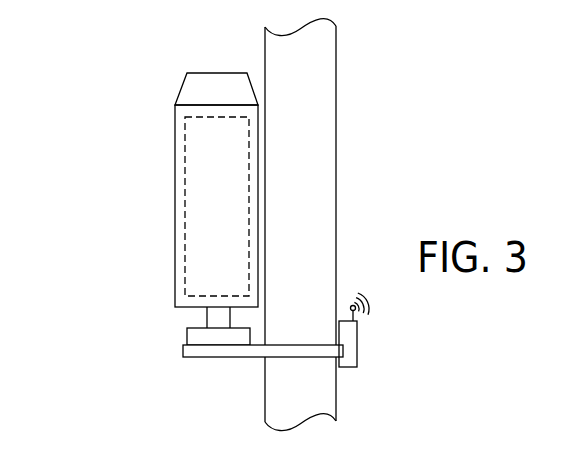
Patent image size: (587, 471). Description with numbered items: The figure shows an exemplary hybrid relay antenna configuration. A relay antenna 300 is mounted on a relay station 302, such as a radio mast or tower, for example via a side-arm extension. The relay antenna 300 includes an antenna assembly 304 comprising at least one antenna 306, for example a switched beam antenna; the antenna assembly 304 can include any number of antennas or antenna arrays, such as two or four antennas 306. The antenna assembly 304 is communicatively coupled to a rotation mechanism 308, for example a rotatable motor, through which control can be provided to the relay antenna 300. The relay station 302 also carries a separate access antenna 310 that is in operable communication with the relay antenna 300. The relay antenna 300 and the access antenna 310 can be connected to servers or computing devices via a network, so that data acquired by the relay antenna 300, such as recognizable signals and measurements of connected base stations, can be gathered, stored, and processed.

The relay antenna 300 is at (64, 65).
The relay station 302 is at (337, 122).
The antenna assembly 304 is at (178, 84).
The antenna 306 is at (197, 218).
The rotation mechanism 308 is at (207, 318).
The access antenna 310 is at (357, 338).